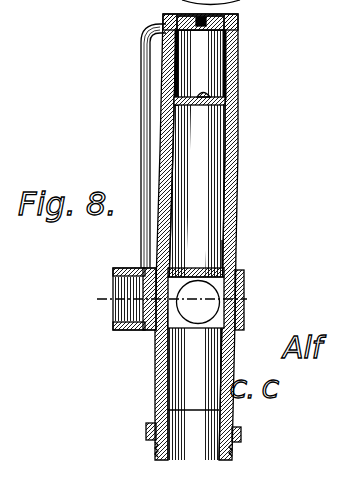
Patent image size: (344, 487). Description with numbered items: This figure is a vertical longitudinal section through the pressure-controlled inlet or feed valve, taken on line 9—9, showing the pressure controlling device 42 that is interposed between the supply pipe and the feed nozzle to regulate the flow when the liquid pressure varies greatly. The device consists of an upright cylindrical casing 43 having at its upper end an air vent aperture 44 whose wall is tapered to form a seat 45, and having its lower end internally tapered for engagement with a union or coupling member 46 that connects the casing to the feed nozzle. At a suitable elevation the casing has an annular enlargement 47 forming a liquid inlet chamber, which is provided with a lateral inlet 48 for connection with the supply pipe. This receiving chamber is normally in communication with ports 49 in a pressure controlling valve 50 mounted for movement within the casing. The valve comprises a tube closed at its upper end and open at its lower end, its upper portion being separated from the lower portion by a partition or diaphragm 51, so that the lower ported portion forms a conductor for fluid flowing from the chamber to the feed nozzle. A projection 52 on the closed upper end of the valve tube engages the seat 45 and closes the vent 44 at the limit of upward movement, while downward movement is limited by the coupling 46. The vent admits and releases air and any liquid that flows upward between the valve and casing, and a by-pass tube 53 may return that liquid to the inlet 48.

The section line 9- 9 is at (171, 294).
The pressure controlling device 42 is at (239, 168).
The upright cylindrical casing 43 is at (236, 198).
The air vent aperture 44 is at (215, 17).
The seat 45 is at (216, 33).
The union or coupling member 46 is at (147, 432).
The annular enlargement 47 is at (240, 312).
The lateral inlet 48 is at (136, 326).
The ports 49 is at (190, 313).
The pressure controlling valve 50 is at (236, 235).
The partition or diaphragm 51 is at (236, 252).
The projection 52 is at (211, 93).
The by-pass tube 53 is at (143, 142).